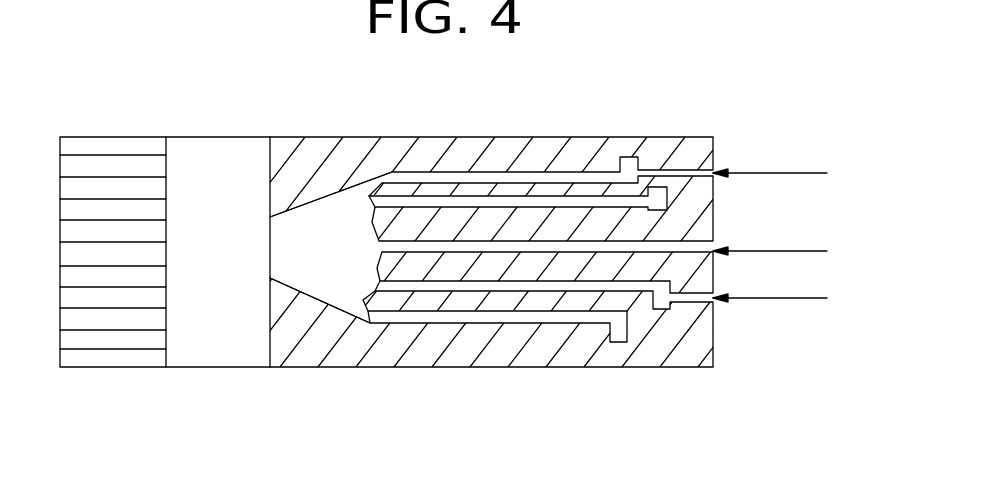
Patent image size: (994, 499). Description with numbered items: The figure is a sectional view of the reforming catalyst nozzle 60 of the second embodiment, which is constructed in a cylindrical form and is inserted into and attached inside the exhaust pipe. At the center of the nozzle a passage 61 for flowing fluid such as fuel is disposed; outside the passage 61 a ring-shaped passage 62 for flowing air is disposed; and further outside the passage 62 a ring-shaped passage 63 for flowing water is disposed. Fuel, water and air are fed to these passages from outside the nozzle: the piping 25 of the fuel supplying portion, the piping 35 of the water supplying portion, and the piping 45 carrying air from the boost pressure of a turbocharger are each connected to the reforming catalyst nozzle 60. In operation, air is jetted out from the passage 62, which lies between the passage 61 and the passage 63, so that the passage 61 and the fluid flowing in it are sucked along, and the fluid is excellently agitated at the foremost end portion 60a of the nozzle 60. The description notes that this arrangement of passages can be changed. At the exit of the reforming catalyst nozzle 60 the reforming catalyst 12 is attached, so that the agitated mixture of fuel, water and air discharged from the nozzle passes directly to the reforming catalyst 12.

The reforming catalyst 12 is at (110, 352).
The piping of the fuel supplying portion 25 is at (787, 249).
The piping of the water supplying portion 35 is at (783, 170).
The piping from the boost pressure of a turbocharger 45 is at (793, 302).
The reforming catalyst nozzle 60 is at (503, 127).
The foremost end portion 60a is at (325, 224).
The passage 61 is at (388, 247).
The ring-shaped passage 62 is at (450, 283).
The ring-shaped passage 63 is at (551, 320).